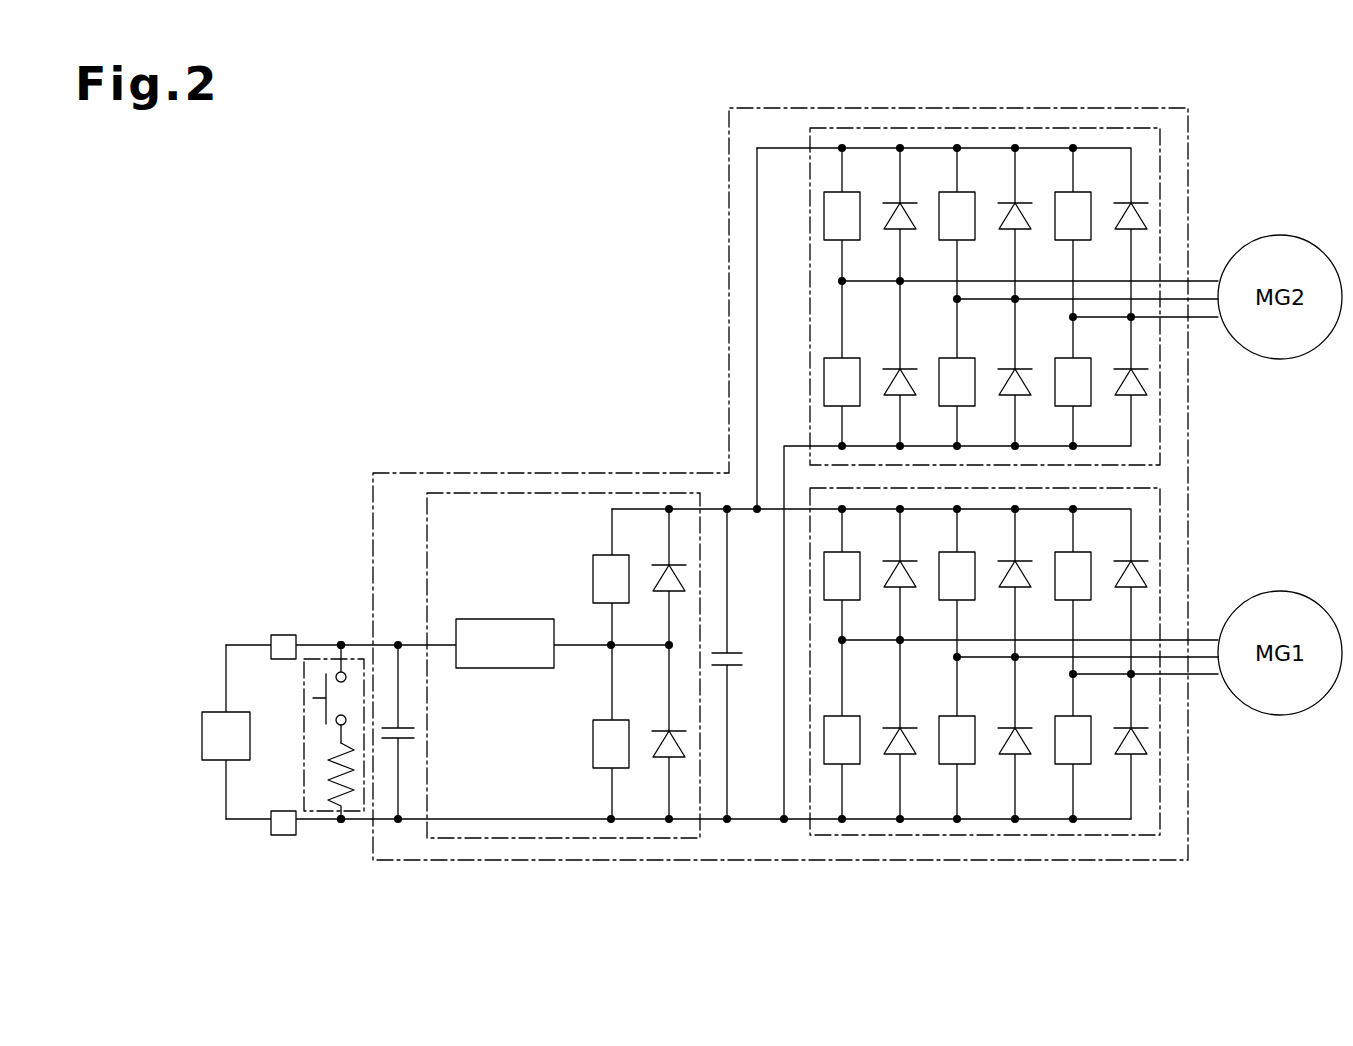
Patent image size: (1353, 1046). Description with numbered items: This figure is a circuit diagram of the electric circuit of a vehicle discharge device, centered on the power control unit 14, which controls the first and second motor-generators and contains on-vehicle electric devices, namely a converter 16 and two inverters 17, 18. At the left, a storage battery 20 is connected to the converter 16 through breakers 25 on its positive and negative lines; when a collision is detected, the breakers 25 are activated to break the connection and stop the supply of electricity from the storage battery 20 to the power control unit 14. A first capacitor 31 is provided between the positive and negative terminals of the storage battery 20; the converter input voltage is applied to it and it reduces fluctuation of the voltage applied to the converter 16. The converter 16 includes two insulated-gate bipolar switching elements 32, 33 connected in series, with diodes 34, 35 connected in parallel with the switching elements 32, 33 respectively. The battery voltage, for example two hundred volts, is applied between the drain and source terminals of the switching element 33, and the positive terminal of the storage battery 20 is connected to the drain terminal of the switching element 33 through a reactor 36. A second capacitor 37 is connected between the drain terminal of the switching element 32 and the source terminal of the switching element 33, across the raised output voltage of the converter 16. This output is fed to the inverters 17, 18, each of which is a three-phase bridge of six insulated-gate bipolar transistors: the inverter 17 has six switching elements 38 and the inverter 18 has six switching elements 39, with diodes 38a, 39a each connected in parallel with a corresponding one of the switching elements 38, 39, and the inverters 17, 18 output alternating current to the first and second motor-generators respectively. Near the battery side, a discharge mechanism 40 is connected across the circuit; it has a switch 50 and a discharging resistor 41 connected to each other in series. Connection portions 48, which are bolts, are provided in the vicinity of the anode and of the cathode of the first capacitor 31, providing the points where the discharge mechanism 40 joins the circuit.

The power control unit 14 is at (1188, 442).
The converter 16 is at (563, 493).
The inverter 17 is at (1160, 512).
The inverter 18 is at (1160, 153).
The storage battery 20 is at (207, 712).
The breaker 25 is at (285, 635).
The first capacitor 31 is at (405, 728).
The switching element 32 is at (593, 570).
The switching element 33 is at (593, 750).
The diode 34 is at (664, 565).
The diode 35 is at (663, 757).
The reactor 36 is at (492, 619).
The second capacitor 37 is at (733, 665).
The switching element 38 is at (955, 552).
The diode 38a is at (893, 561).
The switching element 39 is at (955, 192).
The diode 39a is at (893, 203).
The discharge mechanism 40 is at (304, 675).
The discharging resistor 41 is at (334, 786).
The connection portion 48 is at (341, 645).
The switch 50 is at (313, 698).